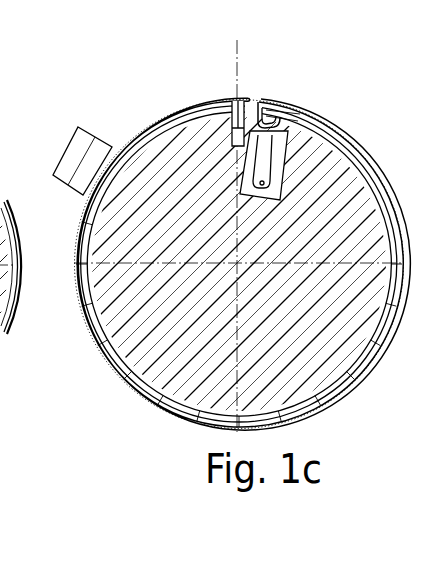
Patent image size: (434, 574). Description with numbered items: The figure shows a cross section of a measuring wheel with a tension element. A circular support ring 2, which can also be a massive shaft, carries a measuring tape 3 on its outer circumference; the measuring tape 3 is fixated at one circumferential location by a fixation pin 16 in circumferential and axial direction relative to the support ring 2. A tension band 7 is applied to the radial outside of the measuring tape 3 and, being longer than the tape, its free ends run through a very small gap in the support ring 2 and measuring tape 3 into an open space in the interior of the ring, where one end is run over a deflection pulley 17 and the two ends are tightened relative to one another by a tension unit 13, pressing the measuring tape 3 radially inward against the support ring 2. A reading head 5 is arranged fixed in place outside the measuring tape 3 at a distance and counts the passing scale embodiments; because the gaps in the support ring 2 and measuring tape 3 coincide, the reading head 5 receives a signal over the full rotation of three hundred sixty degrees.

The support ring 2 is at (122, 163).
The measuring tape 3 is at (133, 137).
The reading head 5 is at (60, 157).
The tension band 7 is at (152, 122).
The tension unit 13 is at (300, 120).
The fixation pin 16 is at (229, 97).
The deflection pulley 17 is at (267, 177).